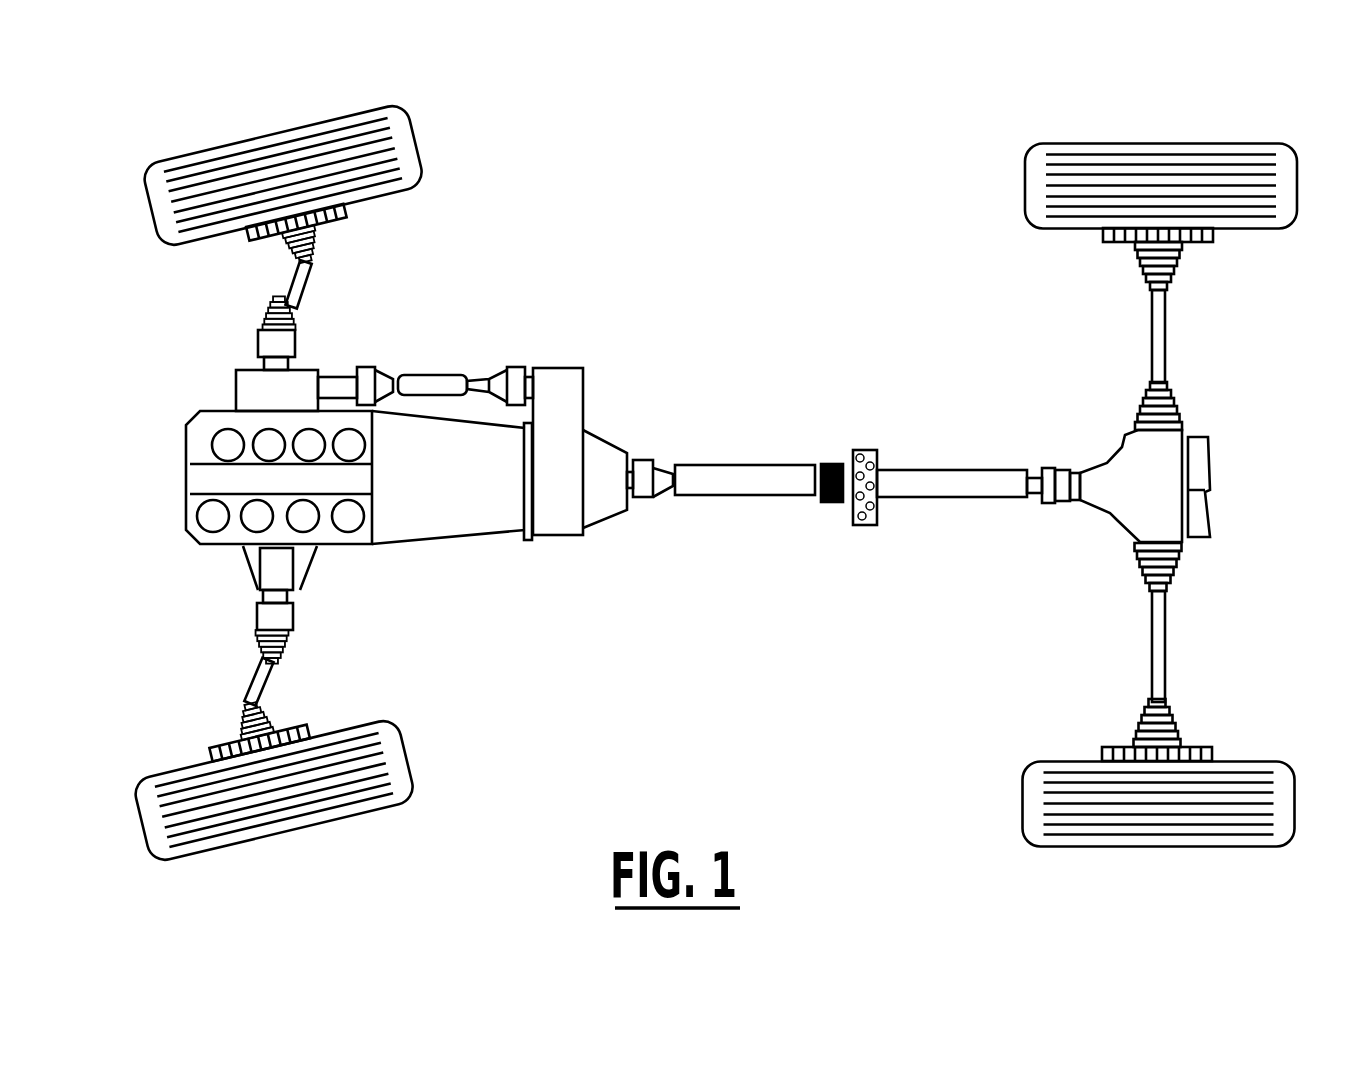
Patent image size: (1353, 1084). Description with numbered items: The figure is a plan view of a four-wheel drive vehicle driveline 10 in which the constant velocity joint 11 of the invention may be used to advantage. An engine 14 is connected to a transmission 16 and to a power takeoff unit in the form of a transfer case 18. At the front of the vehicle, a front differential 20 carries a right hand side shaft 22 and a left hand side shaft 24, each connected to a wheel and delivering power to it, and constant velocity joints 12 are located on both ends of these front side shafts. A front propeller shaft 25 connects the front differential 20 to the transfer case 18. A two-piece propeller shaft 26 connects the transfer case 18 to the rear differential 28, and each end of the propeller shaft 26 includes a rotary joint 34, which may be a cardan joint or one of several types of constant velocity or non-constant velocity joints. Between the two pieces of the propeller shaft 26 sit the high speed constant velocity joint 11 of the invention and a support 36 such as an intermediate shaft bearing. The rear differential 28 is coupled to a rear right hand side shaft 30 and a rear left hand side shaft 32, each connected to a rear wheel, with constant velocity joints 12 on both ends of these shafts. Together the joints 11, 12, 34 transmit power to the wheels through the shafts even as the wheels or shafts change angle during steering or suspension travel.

The four-wheel drive vehicle driveline 10 is at (740, 222).
The constant velocity joint 11 is at (842, 442).
The constant velocity joints 12 is at (318, 253).
The engine 14 is at (194, 483).
The transmission 16 is at (470, 525).
The transfer case 18 is at (587, 417).
The front differential 20 is at (247, 392).
The right hand side shaft 22 is at (307, 298).
The left hand side shaft 24 is at (252, 683).
The front propeller shaft 25 is at (436, 373).
The propeller shaft 26 is at (780, 530).
The rear differential 28 is at (1167, 463).
The rear right hand side shaft 30 is at (1165, 342).
The rear left hand side shaft 32 is at (1165, 652).
The rotary joint 34 is at (378, 366).
The support 36 is at (870, 527).